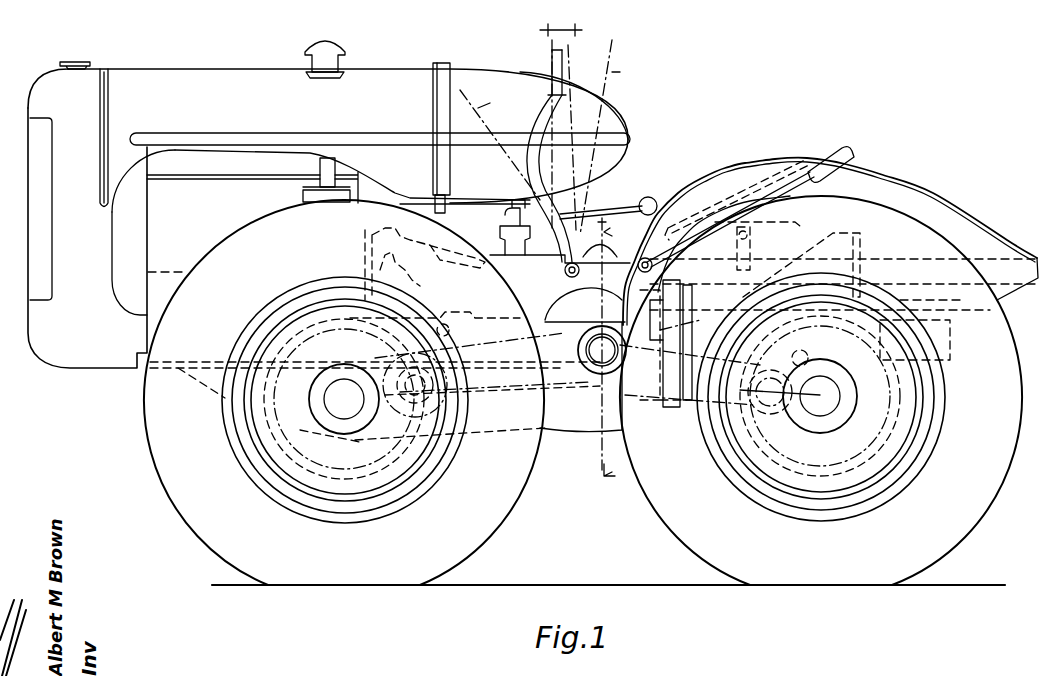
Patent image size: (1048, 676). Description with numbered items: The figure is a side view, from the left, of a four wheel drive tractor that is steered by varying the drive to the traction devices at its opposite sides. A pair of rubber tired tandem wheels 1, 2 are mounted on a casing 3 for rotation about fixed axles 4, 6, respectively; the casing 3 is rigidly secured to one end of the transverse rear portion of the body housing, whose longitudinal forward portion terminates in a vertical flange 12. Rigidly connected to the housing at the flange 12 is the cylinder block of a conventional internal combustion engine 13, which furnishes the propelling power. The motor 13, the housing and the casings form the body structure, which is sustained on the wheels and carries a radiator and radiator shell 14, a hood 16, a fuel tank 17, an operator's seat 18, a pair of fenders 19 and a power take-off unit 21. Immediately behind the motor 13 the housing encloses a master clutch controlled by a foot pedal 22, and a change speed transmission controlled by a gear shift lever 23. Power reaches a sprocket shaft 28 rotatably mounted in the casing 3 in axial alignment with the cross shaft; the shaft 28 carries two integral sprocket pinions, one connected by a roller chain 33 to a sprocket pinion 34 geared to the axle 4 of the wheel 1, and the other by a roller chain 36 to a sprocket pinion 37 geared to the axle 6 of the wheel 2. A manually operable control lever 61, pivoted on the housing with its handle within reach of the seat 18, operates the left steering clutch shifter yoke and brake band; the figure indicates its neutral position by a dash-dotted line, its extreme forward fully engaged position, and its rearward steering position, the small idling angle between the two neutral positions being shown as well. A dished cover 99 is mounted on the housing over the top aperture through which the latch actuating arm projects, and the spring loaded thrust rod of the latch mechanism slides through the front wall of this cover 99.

The tandem wheel 1 is at (165, 482).
The tandem wheel 2 is at (995, 478).
The casing 3 is at (555, 428).
The axle 4 is at (340, 420).
The axle 6 is at (826, 412).
The vertical flange 12 is at (408, 372).
The internal combustion engine 13 is at (150, 232).
The radiator and radiator shell 14 is at (30, 100).
The hood 16 is at (208, 70).
The fuel tank 17 is at (485, 72).
The operator's seat 18 is at (842, 150).
The fenders 19 is at (930, 194).
The power take-off unit 21 is at (850, 386).
The foot pedal 22 is at (405, 293).
The gear shift lever 23 is at (620, 206).
The sprocket shaft 28 is at (592, 378).
The roller chain 33 is at (480, 392).
The sprocket pinion 34 is at (460, 345).
The roller chain 36 is at (660, 392).
The sprocket pinion 37 is at (765, 370).
The control lever 61 is at (540, 172).
The dished cover 99 is at (602, 232).